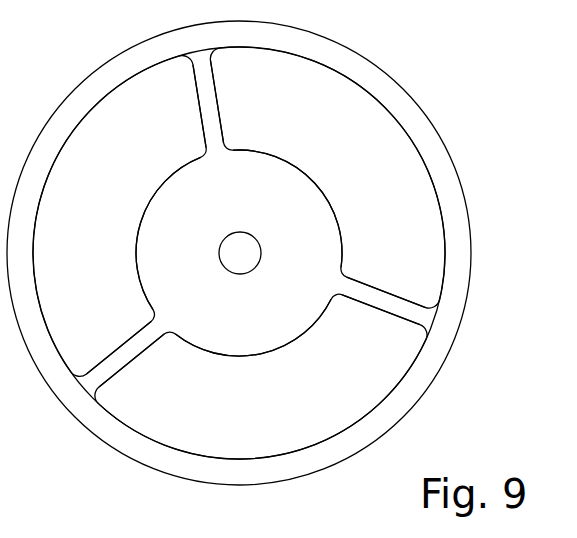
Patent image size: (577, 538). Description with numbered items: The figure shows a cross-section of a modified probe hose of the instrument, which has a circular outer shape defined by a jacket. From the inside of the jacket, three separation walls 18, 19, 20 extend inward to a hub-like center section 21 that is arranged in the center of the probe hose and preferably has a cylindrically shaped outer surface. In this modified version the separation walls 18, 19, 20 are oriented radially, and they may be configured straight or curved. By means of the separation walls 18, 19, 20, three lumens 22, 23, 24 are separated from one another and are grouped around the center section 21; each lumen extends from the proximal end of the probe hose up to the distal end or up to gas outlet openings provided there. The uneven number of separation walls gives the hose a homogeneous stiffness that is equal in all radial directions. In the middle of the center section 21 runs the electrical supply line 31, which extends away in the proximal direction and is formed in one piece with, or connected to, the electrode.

The separation wall 18 is at (213, 116).
The separation wall 19 is at (120, 358).
The separation wall 20 is at (385, 303).
The hub-like center section 21 is at (327, 238).
The lumen 22 is at (123, 196).
The lumen 23 is at (277, 416).
The lumen 24 is at (372, 174).
The electrical supply line 31 is at (240, 247).